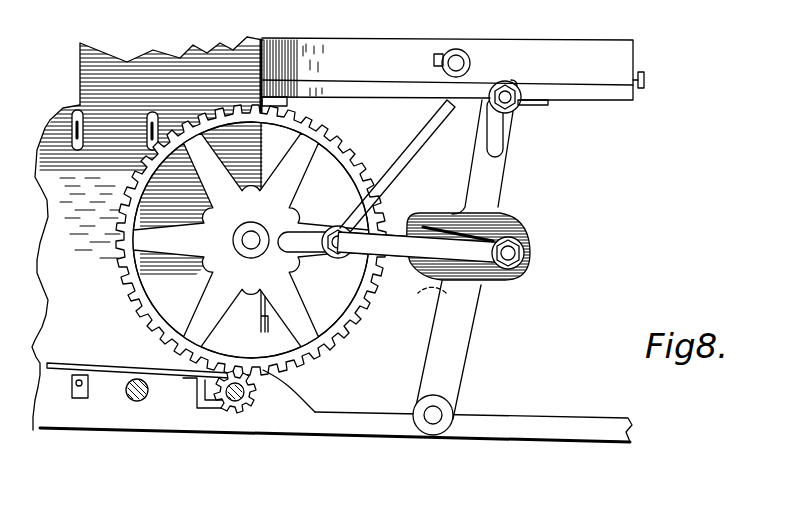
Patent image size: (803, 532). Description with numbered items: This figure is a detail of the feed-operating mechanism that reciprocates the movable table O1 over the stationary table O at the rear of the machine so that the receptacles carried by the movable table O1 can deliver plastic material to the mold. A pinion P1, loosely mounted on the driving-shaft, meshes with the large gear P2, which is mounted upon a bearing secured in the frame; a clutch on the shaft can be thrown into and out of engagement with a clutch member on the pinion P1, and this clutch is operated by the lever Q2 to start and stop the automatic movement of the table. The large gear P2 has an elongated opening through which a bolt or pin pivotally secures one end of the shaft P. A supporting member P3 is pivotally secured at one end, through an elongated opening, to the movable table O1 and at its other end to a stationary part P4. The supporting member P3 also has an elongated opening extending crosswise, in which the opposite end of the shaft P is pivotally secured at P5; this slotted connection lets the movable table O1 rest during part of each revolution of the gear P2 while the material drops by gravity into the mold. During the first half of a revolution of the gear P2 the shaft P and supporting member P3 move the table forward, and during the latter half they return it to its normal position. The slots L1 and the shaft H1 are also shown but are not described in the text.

The movable table O1 is at (358, 30).
The stationary table O is at (632, 103).
The slots L1 is at (105, 120).
The shaft P is at (300, 250).
The pinion P1 is at (250, 403).
The large gear P2 is at (503, 133).
The supporting member P3 is at (520, 182).
The stationary part P4 is at (423, 226).
The pivot of shaft P5 is at (528, 254).
The lever Q2 is at (108, 366).
The shaft H1 is at (137, 402).